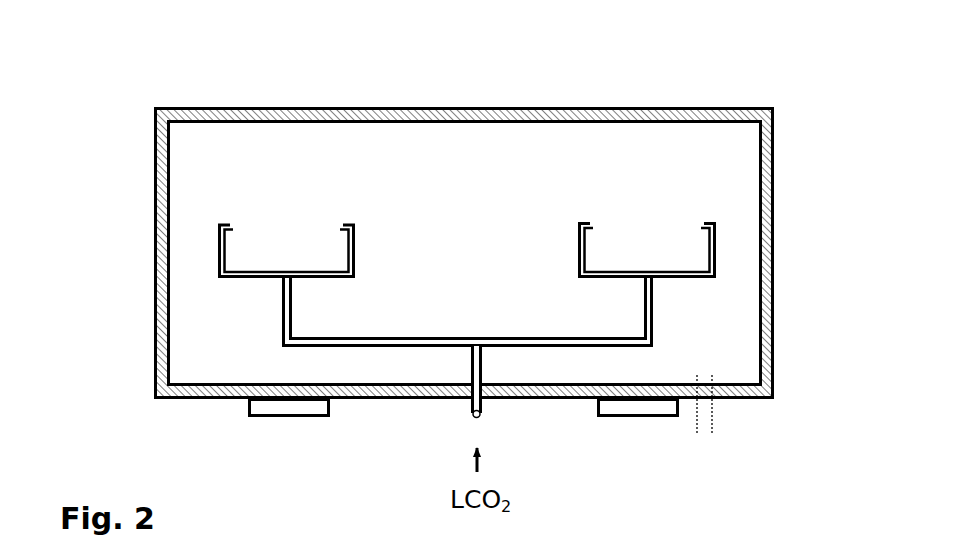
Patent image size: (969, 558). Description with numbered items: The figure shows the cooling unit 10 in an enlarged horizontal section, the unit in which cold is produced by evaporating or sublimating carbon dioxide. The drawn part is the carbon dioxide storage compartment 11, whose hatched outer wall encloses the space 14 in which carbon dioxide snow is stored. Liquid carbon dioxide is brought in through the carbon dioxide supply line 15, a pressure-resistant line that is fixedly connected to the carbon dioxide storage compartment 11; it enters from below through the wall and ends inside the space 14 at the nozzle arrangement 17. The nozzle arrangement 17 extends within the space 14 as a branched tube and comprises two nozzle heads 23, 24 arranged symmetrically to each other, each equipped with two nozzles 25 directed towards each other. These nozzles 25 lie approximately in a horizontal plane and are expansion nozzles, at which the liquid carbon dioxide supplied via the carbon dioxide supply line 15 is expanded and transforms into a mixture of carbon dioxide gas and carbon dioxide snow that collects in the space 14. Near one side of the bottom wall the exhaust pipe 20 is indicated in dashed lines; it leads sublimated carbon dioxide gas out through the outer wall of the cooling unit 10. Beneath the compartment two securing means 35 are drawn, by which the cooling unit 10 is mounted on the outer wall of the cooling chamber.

The cooling unit 10 is at (156, 64).
The carbon dioxide storage compartment 11 is at (156, 174).
The space 14 is at (483, 250).
The carbon dioxide supply line 15 is at (472, 413).
The nozzle arrangement 17 is at (282, 318).
The exhaust pipe 20 is at (707, 420).
The nozzle head 23 is at (218, 247).
The nozzle head 24 is at (716, 235).
The nozzle 25 is at (233, 226).
The securing means 35 is at (264, 409).